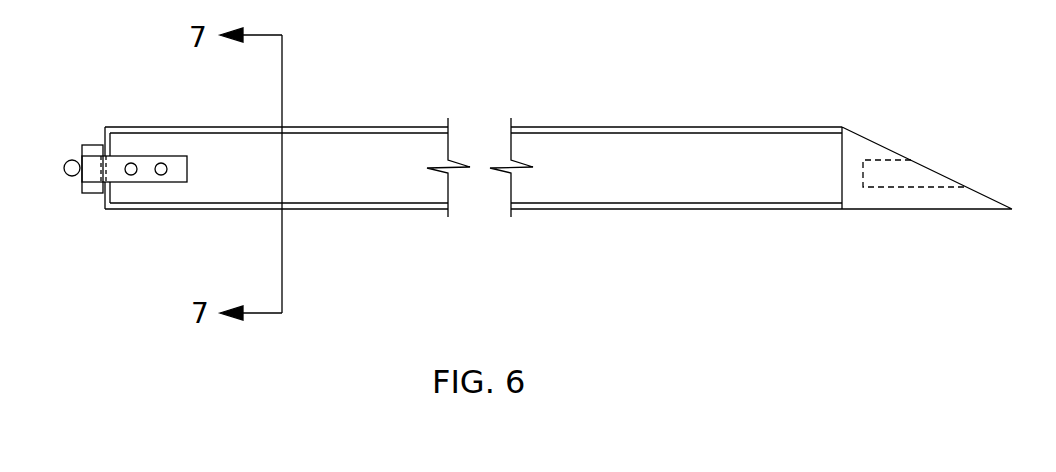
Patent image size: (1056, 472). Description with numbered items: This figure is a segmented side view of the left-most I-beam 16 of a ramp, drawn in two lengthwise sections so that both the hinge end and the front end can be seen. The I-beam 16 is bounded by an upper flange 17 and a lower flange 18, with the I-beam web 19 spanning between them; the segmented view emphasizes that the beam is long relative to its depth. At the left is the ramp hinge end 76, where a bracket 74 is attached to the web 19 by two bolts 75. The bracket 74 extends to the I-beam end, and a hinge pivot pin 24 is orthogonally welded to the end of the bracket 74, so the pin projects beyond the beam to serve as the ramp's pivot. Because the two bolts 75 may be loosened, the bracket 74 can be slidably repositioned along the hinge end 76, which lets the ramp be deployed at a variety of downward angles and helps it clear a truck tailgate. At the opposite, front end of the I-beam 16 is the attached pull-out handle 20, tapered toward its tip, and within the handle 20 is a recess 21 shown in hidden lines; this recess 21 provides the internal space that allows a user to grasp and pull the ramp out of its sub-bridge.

The I-beam 16 is at (553, 100).
The upper flange 17 is at (375, 127).
The lower flange 18 is at (392, 210).
The web 19 is at (305, 192).
The pull-out handle 20 is at (883, 147).
The recess 21 is at (940, 171).
The hinge pivot pin 24 is at (76, 155).
The bracket 74 is at (167, 182).
The bolts 75 is at (132, 162).
The ramp hinge end 76 is at (105, 201).